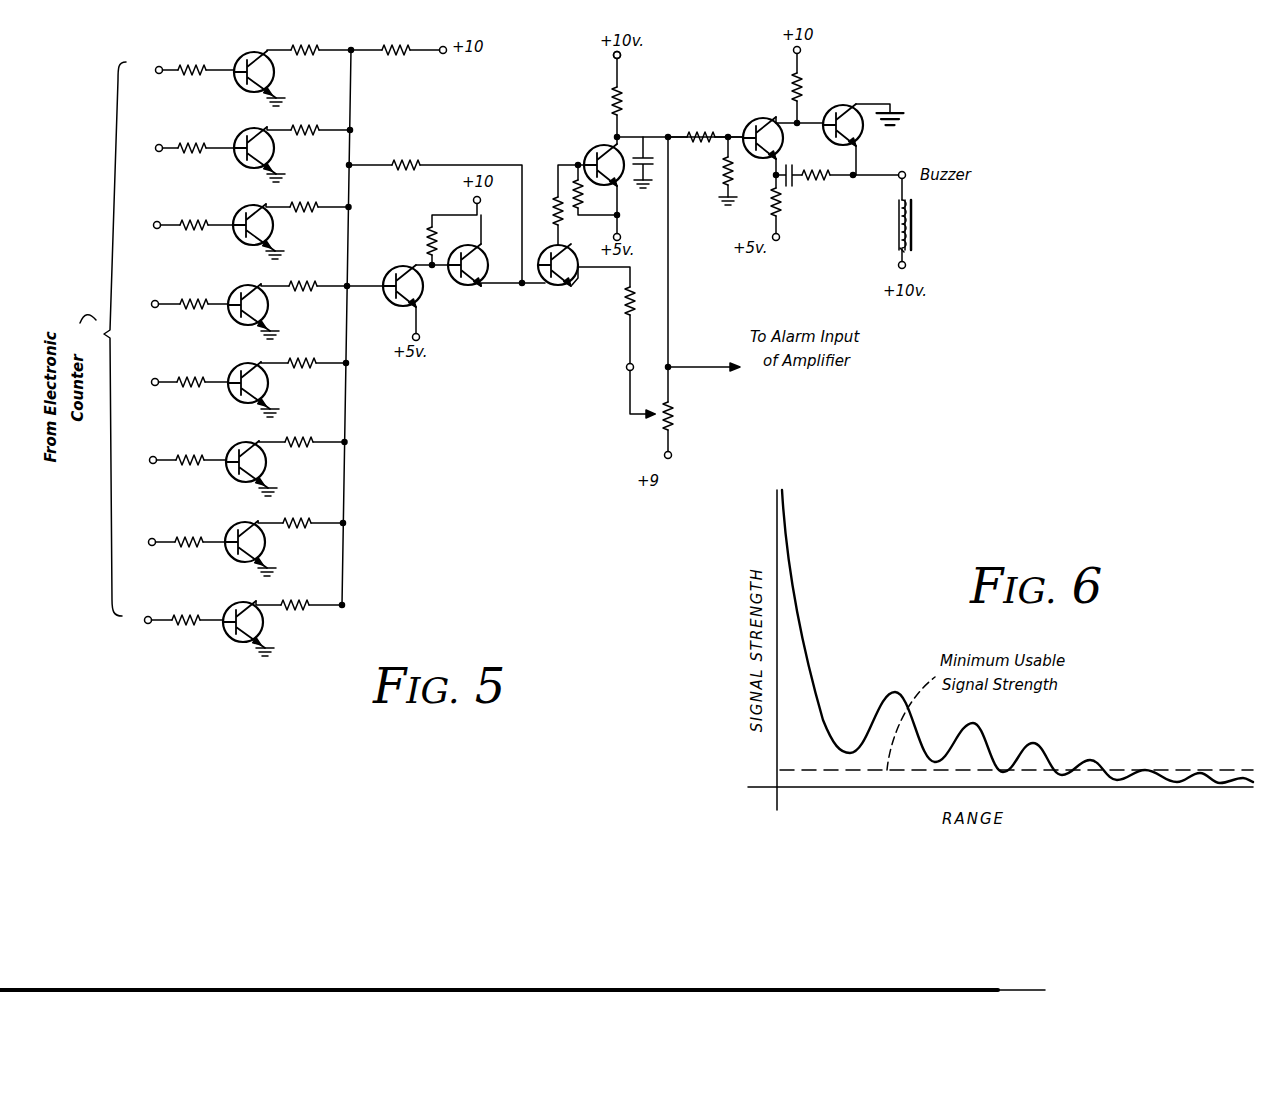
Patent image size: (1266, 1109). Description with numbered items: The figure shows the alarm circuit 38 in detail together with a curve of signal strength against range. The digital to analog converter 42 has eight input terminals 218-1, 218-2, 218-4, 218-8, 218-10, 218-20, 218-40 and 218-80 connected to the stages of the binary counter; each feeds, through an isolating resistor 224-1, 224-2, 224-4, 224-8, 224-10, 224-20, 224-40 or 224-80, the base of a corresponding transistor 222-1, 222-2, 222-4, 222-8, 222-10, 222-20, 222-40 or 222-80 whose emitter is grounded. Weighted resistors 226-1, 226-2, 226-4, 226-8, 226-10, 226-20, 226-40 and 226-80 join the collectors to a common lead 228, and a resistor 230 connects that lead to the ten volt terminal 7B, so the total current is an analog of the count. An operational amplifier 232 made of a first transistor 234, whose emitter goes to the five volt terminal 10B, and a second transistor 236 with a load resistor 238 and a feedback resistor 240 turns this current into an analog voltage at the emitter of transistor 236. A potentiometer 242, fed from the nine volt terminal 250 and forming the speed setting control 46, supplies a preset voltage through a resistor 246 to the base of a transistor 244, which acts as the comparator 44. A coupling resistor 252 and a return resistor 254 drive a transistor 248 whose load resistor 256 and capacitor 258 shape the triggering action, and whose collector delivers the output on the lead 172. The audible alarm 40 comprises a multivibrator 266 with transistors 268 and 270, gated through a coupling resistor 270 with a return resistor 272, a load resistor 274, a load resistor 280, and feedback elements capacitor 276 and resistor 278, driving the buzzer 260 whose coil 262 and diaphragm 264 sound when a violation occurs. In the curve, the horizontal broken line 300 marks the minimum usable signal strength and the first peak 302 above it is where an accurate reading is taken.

In FIG. 5, the input terminal 218-80 is at (168, 55).
In FIG. 5, the isolating resistor 224-80 is at (197, 63).
In FIG. 5, the transistor 222-80 is at (274, 75).
In FIG. 5, the weighted resistor 226-80 is at (316, 48).
In FIG. 5, the resistor 230 is at (395, 64).
In FIG. 5, the +10 volt terminal 7B is at (446, 54).
In FIG. 5, the input terminal 218-40 is at (156, 150).
In FIG. 5, the isolating resistor 224-40 is at (201, 143).
In FIG. 5, the transistor 222-40 is at (256, 122).
In FIG. 5, the weighted resistor 226-40 is at (317, 120).
In FIG. 5, the input terminal 218-20 is at (155, 222).
In FIG. 5, the isolating resistor 224-20 is at (206, 230).
In FIG. 5, the transistor 222-20 is at (256, 200).
In FIG. 5, the weighted resistor 226-20 is at (303, 203).
In FIG. 5, the input terminal 218-10 is at (153, 307).
In FIG. 5, the isolating resistor 224-10 is at (200, 300).
In FIG. 5, the transistor 222-10 is at (253, 284).
In FIG. 5, the weighted resistor 226-10 is at (303, 292).
In FIG. 5, the input terminal 218-8 is at (153, 380).
In FIG. 5, the isolating resistor 224-8 is at (197, 388).
In FIG. 5, the transistor 222-8 is at (248, 362).
In FIG. 5, the weighted resistor 226-8 is at (310, 379).
In FIG. 5, the input terminal 218-4 is at (150, 463).
In FIG. 5, the isolating resistor 224-4 is at (190, 456).
In FIG. 5, the transistor 222-4 is at (252, 440).
In FIG. 5, the weighted resistor 226-4 is at (309, 458).
In FIG. 5, the input terminal 218-2 is at (149, 540).
In FIG. 5, the isolating resistor 224-2 is at (192, 548).
In FIG. 5, the transistor 222-2 is at (248, 520).
In FIG. 5, the weighted resistor 226-2 is at (309, 537).
In FIG. 5, the input terminal 218-1 is at (146, 622).
In FIG. 5, the isolating resistor 224-1 is at (180, 614).
In FIG. 5, the transistor 222-1 is at (243, 602).
In FIG. 5, the weighted resistor 226-1 is at (308, 620).
In FIG. 5, the common lead 228 is at (346, 497).
In FIG. 5, the digital to analog converter 42 is at (243, 680).
In FIG. 5, the resistor 240 is at (406, 163).
In FIG. 5, the first transistor 234 is at (422, 299).
In FIG. 5, the +5 volt terminal 10B is at (422, 345).
In FIG. 5, the operational amplifier 232 is at (466, 331).
In FIG. 5, the load resistor 238 is at (428, 236).
In FIG. 5, the second transistor 236 is at (482, 258).
In FIG. 5, the comparator 44 is at (548, 311).
In FIG. 5, the transistor 244 is at (568, 292).
In FIG. 5, the coupling resistor 252 is at (555, 196).
In FIG. 5, the return resistor 254 is at (578, 178).
In FIG. 5, the second transistor 248 is at (600, 146).
In FIG. 5, the resistor 246 is at (624, 312).
In FIG. 5, the load resistor 256 is at (622, 95).
In FIG. 5, the capacitor 258 is at (652, 154).
In FIG. 5, the lead 172 is at (690, 365).
In FIG. 5, the potentiometer 242 is at (676, 414).
In FIG. 5, the +9 volt power supply terminal 250 is at (672, 454).
In FIG. 5, the speed setting control 46 is at (633, 442).
In FIG. 5, the coupling resistor / transistor 270 is at (704, 136).
In FIG. 5, the return resistor 272 is at (724, 170).
In FIG. 5, the transistor 268 is at (756, 118).
In FIG. 5, the load resistor 274 is at (804, 90).
In FIG. 5, the load resistor 280 is at (770, 205).
In FIG. 5, the resistor 278 is at (812, 162).
In FIG. 5, the capacitor 276 is at (800, 180).
In FIG. 5, the audible alarm 40 is at (841, 240).
In FIG. 5, the alarm circuit 38 is at (923, 74).
In FIG. 5, the multivibrator circuit 266 is at (890, 147).
In FIG. 5, the buzzer 260 is at (918, 212).
In FIG. 5, the diaphragm 264 is at (912, 232).
In FIG. 5, the coil 262 is at (912, 254).
In FIG. 6, the horizontal broken line 300 is at (863, 770).
In FIG. 6, the first peak 302 is at (1145, 773).